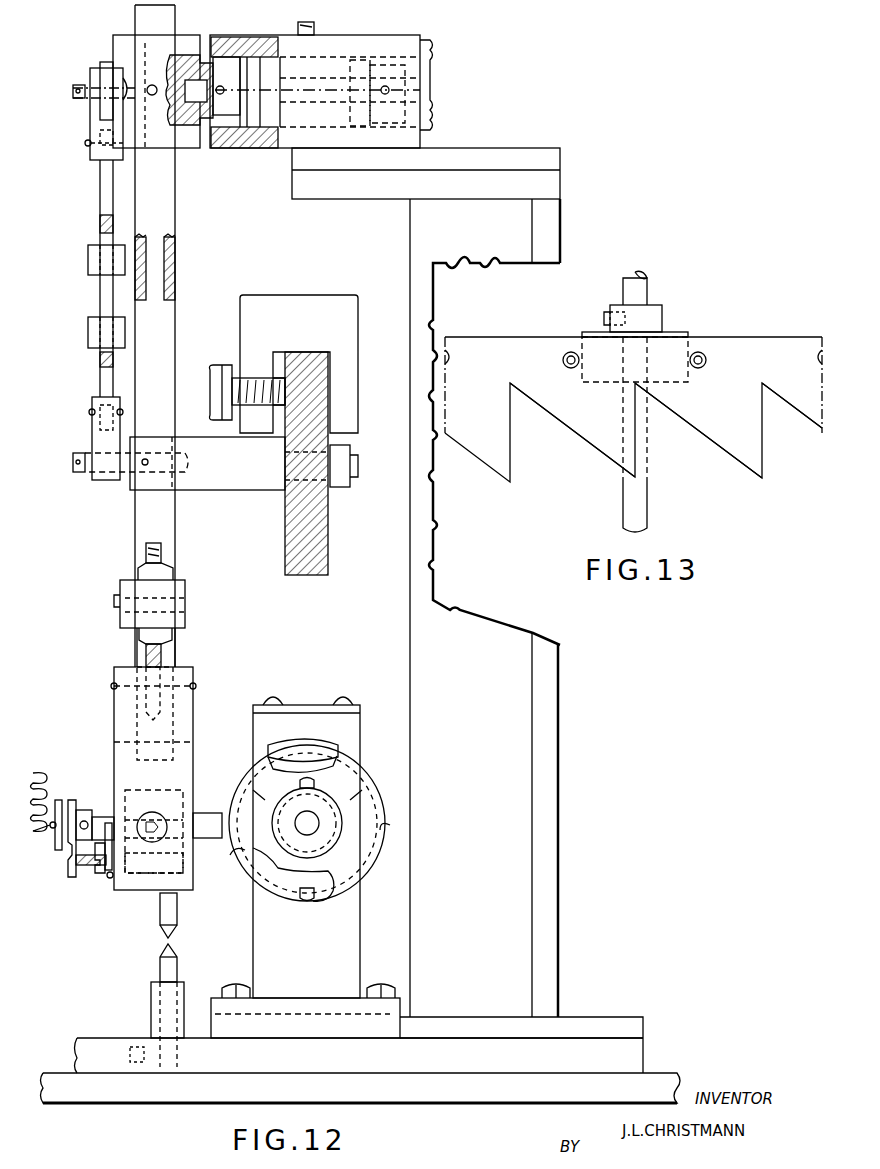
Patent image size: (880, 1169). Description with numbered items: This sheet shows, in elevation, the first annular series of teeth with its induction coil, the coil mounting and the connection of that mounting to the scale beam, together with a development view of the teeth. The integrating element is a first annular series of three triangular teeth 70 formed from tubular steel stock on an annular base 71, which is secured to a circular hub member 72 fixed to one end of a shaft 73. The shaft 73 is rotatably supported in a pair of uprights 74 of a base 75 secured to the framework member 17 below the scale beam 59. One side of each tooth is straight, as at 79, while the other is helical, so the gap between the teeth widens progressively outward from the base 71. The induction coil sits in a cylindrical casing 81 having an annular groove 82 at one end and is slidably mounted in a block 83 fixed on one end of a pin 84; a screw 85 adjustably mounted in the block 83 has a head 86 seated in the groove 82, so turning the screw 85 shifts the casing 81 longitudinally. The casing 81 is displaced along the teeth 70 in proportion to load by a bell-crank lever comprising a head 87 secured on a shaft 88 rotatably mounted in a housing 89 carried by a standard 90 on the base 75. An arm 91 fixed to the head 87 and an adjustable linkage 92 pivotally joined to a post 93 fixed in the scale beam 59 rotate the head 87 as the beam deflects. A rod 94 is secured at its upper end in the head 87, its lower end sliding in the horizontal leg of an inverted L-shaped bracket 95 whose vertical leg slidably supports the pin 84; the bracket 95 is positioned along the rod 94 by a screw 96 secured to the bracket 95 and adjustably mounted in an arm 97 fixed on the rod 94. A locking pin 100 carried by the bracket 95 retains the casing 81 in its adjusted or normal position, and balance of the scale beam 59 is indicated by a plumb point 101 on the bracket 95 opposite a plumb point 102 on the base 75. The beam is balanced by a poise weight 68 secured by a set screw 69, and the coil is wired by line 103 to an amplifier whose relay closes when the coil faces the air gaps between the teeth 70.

In FIG. 12, the framework member 17 is at (663, 1075).
In FIG. 12, the scale beam 59 is at (300, 520).
In FIG. 12, the poise weight 68 is at (292, 300).
In FIG. 12, the set screw 69 is at (215, 370).
In FIG. 12, the triangular teeth 70 is at (295, 748).
In FIG. 13, the triangular teeth 70 is at (512, 478).
In FIG. 13, the annular base 71 is at (741, 350).
In FIG. 13, the circular hub member 72 is at (680, 333).
In FIG. 12, the shaft 73 is at (312, 825).
In FIG. 13, the shaft 73 is at (638, 296).
In FIG. 12, the uprights 74 is at (268, 955).
In FIG. 12, the base 75 is at (582, 1032).
In FIG. 12, the straight side 79 is at (320, 752).
In FIG. 13, the straight side 79 is at (512, 450).
In FIG. 12, the induction coil casing 81 is at (212, 825).
In FIG. 12, the annular groove 82 is at (70, 825).
In FIG. 12, the block 83 is at (135, 785).
In FIG. 12, the pin 84 is at (160, 818).
In FIG. 12, the screw 85 is at (87, 865).
In FIG. 12, the head 86 is at (64, 877).
In FIG. 12, the head 87 is at (186, 45).
In FIG. 12, the shaft 88 is at (200, 92).
In FIG. 12, the housing 89 is at (250, 142).
In FIG. 12, the standard 90 is at (478, 618).
In FIG. 12, the arm 91 is at (105, 70).
In FIG. 12, the adjustable linkage 92 is at (100, 298).
In FIG. 12, the post 93 is at (228, 475).
In FIG. 12, the rod 94 is at (162, 215).
In FIG. 12, the inverted L-shaped bracket 95 is at (185, 717).
In FIG. 12, the screw 96 is at (160, 553).
In FIG. 12, the arm 97 is at (180, 610).
In FIG. 12, the locking pin 100 is at (110, 820).
In FIG. 12, the plumb point 101 is at (168, 912).
In FIG. 12, the plumb point 102 is at (168, 968).
In FIG. 12, the line 103 is at (33, 775).